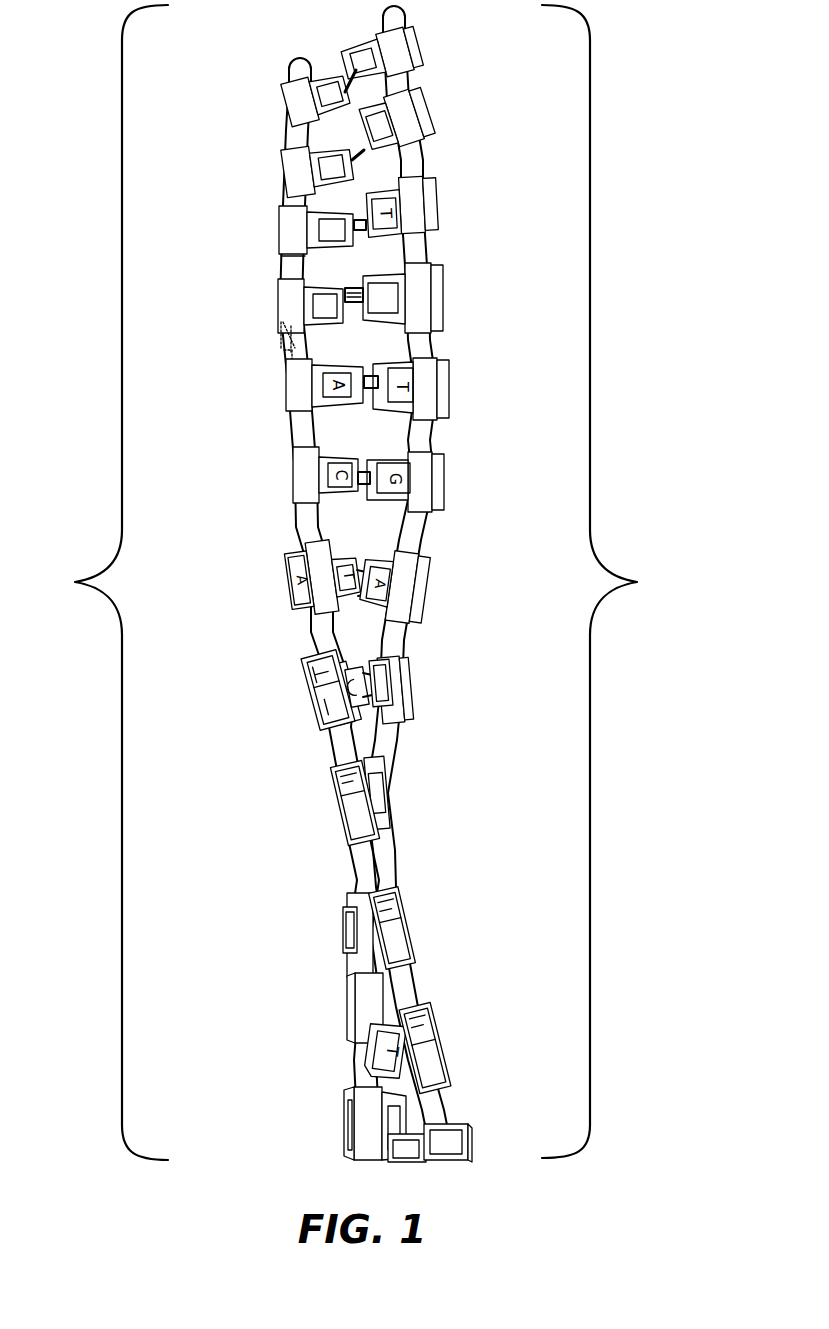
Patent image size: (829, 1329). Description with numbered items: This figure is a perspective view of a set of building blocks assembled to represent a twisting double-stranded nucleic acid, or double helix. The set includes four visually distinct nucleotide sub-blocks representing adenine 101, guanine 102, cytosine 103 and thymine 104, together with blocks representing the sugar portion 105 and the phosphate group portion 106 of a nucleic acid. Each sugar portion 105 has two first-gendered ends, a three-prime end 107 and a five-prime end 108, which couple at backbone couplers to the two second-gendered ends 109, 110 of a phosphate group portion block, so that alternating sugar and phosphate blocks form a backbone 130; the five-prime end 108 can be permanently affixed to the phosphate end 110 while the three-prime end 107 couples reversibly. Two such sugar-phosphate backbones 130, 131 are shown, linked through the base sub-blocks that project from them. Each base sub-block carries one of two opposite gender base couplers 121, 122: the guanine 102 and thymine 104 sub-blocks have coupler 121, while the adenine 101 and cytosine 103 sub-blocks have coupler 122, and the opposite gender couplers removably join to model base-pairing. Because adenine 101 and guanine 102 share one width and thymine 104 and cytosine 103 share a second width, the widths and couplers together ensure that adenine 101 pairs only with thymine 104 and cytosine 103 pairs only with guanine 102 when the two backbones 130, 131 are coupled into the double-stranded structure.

The adenine sub-block 101 is at (284, 160).
The guanine sub-block 102 is at (410, 46).
The cytosine sub-block 103 is at (284, 98).
The thymine sub-block 104 is at (425, 120).
The sugar portion 105 is at (270, 226).
The phosphate group portion 106 is at (272, 351).
The 3' end 107 is at (284, 251).
The 5' end 108 is at (282, 214).
The second-gendered end of phosphate group portion block 109 is at (282, 338).
The second-gendered end of phosphate group portion block 110 is at (282, 362).
The base coupler 121 is at (354, 291).
The base coupler 122 is at (363, 301).
The backbone 130 is at (97, 582).
The backbone 131 is at (614, 581).